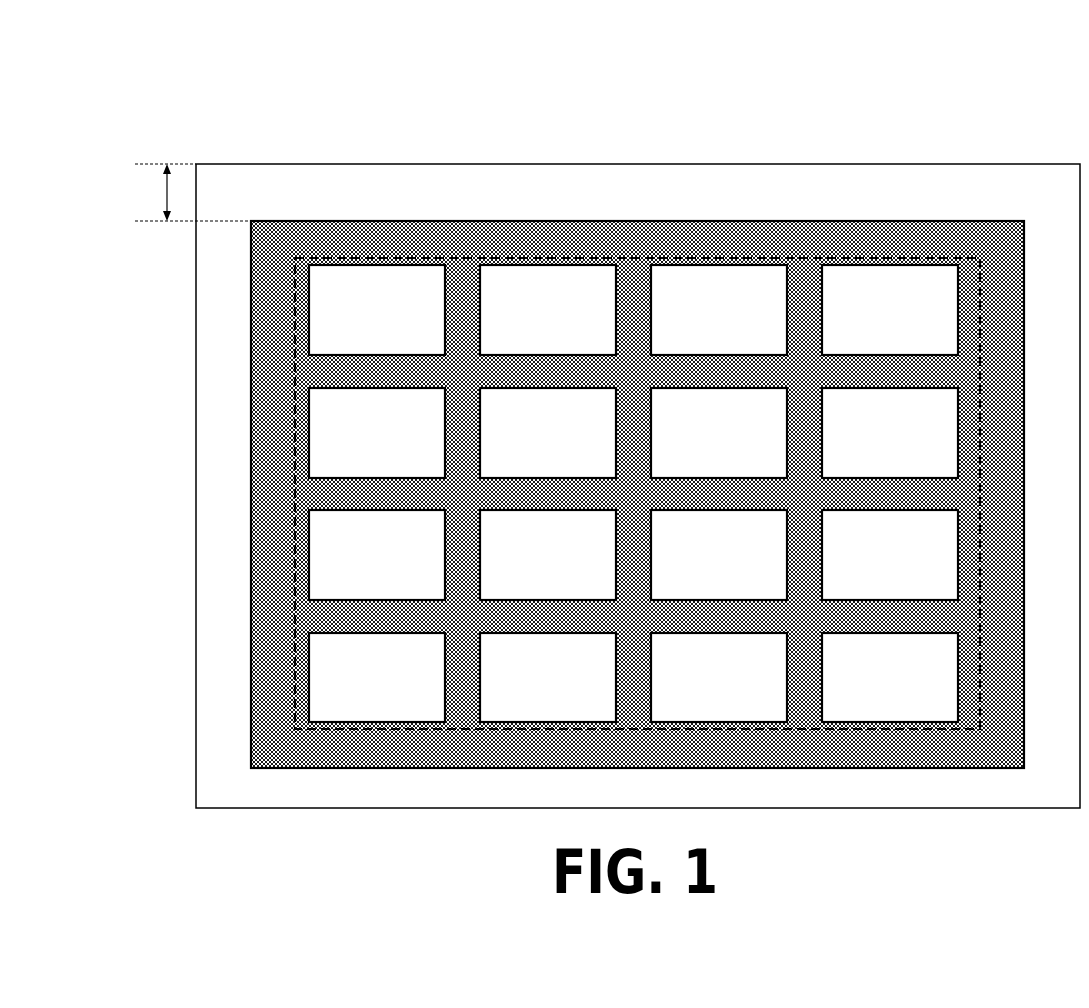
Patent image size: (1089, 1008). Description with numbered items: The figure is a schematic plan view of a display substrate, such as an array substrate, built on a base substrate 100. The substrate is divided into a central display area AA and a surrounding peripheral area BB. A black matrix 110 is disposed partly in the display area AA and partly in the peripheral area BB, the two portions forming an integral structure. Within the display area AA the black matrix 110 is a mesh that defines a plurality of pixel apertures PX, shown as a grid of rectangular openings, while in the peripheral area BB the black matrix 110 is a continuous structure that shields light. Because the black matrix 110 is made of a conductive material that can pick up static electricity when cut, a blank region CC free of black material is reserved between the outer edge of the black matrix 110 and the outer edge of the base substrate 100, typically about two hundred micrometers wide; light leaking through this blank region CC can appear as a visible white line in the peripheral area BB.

The base substrate 100 is at (333, 164).
The black matrix 110 is at (818, 222).
The pixel apertures PX is at (571, 293).
The display area AA is at (633, 258).
The peripheral area BB is at (700, 197).
The blank region CC is at (173, 192).